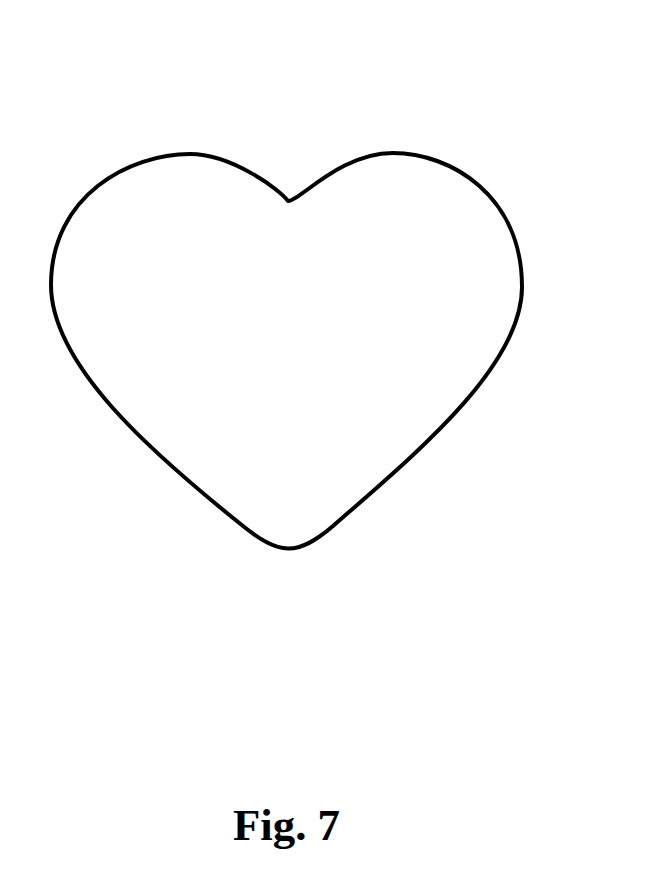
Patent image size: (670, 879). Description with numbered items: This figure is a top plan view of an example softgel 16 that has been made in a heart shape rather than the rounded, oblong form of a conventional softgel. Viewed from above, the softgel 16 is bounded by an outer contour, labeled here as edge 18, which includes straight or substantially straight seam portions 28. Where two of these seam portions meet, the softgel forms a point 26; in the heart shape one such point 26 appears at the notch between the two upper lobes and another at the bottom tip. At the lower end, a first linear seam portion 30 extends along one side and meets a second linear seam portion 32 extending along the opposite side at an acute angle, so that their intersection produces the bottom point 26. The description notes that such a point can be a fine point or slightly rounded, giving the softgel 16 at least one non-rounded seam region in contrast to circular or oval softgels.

The softgel 16 is at (468, 202).
The outer edge 18 is at (505, 292).
The point 26 is at (302, 163).
The seam portions 28 is at (423, 448).
The first linear seam portion 30 is at (507, 493).
The second linear seam portion 32 is at (125, 428).